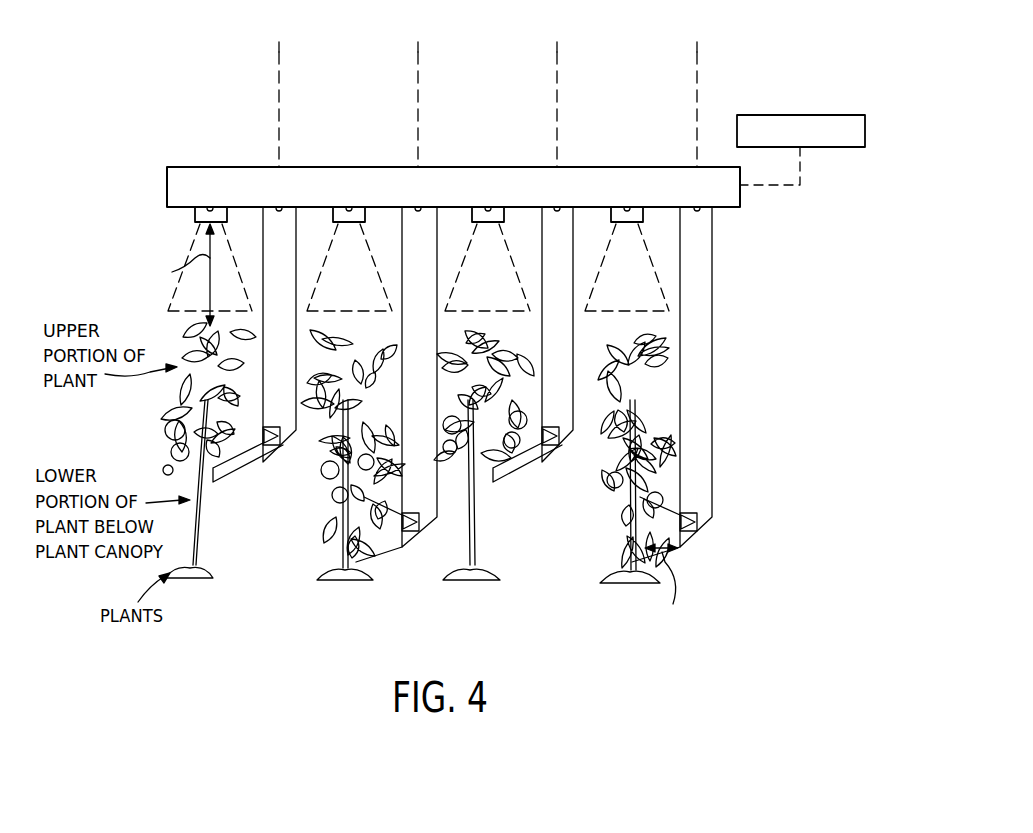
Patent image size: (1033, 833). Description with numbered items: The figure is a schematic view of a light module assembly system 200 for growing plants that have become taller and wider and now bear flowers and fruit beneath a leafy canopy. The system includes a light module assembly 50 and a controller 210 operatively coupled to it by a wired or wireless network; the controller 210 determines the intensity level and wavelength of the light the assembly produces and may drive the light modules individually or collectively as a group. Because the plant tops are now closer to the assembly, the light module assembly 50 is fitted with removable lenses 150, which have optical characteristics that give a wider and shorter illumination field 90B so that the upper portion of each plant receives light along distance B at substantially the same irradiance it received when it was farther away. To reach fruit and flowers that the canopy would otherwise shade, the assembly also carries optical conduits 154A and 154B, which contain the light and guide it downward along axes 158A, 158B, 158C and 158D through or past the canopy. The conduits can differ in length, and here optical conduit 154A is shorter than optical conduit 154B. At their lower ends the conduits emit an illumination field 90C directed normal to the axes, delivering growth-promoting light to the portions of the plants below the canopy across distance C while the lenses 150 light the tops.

The light module assembly system 200 is at (214, 143).
The light module assembly 50 is at (408, 176).
The removable lens 150 is at (195, 213).
The axis 158A is at (279, 48).
The axis 158B is at (418, 48).
The axis 158C is at (557, 48).
The axis 158D is at (697, 48).
The illumination field 90B is at (613, 237).
The illumination field 90C is at (645, 495).
The optical conduit 154A is at (266, 462).
The optical conduit 154B is at (420, 548).
The controller 210 is at (867, 98).